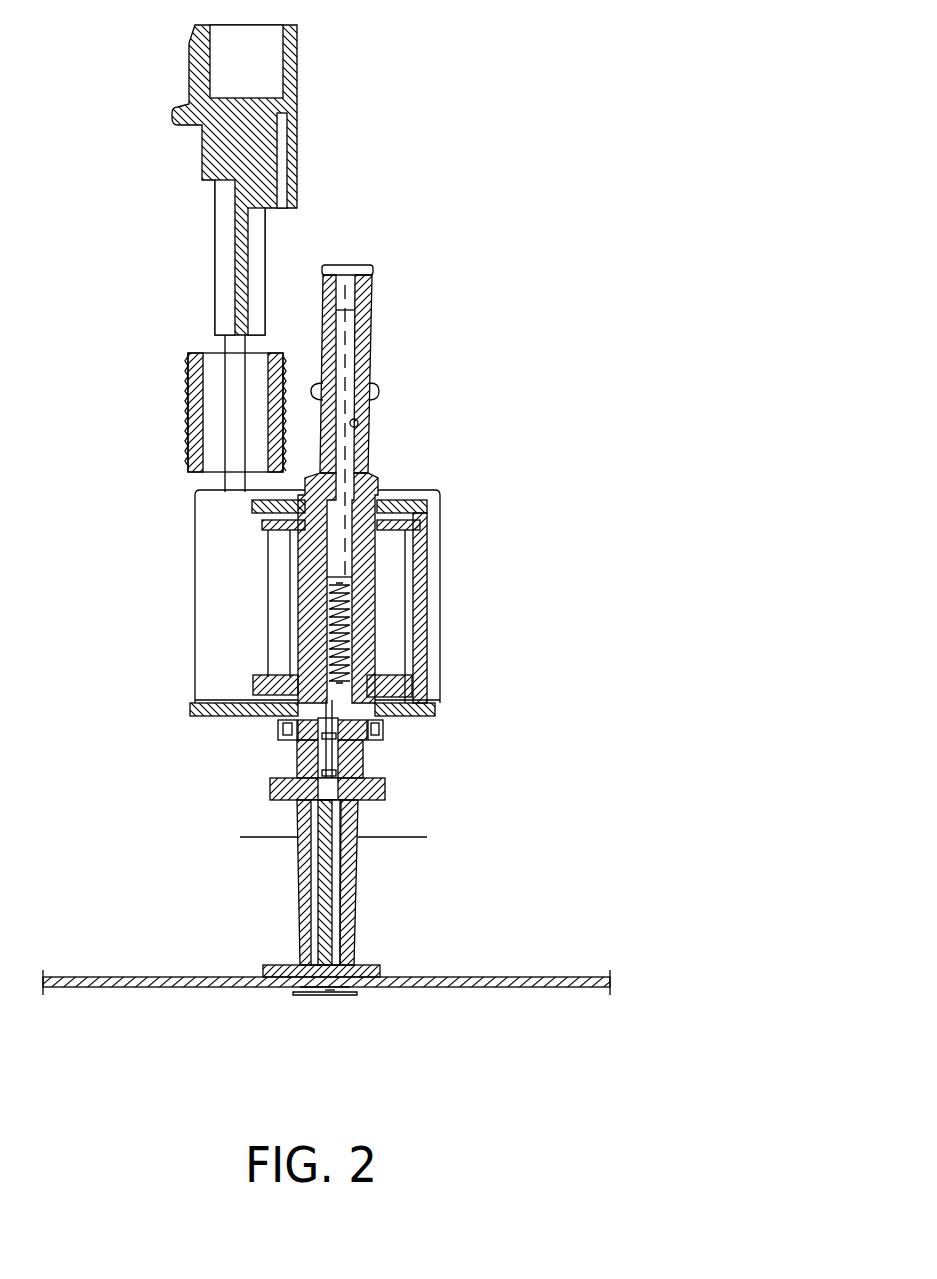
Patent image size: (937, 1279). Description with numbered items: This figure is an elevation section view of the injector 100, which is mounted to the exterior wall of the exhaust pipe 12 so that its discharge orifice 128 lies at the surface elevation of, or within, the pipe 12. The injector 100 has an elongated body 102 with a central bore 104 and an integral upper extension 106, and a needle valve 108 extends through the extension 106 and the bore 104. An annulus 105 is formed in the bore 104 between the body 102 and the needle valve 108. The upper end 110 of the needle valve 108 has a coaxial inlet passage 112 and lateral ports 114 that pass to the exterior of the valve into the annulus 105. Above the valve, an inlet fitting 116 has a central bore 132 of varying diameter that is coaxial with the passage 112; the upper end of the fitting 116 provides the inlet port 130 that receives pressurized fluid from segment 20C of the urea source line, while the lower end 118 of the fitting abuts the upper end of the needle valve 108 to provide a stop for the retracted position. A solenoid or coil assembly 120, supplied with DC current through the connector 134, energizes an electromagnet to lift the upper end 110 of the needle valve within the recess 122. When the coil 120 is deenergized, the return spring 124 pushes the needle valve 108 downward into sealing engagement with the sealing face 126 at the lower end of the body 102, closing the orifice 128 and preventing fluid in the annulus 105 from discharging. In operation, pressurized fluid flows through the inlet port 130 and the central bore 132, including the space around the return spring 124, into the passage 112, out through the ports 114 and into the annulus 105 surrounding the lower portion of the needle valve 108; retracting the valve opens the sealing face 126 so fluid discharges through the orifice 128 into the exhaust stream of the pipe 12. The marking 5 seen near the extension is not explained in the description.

The exhaust pipe 12 is at (135, 975).
The segment of urea source line 20C is at (354, 163).
The injector 100 is at (452, 113).
The elongated body 102 is at (356, 870).
The central bore 104 is at (300, 862).
The annulus 105 is at (339, 848).
The integral upper extension 106 is at (290, 767).
The needle valve 108 is at (352, 905).
The upper end of needle valve 110 is at (413, 670).
The coaxial inlet passage 112 is at (285, 729).
The lateral ports 114 is at (300, 795).
The inlet fitting 116 is at (402, 391).
The lower end of fitting 118 is at (297, 663).
The solenoid or coil assembly 120 is at (368, 603).
The recess 122 is at (383, 735).
The return spring 124 is at (374, 592).
The sealing face 126 is at (330, 998).
The discharge orifice 128 is at (321, 996).
The inlet port 130 is at (356, 264).
The central bore of fitting 132 is at (360, 423).
The connector 134 is at (211, 300).
The section reference 5 is at (296, 757).